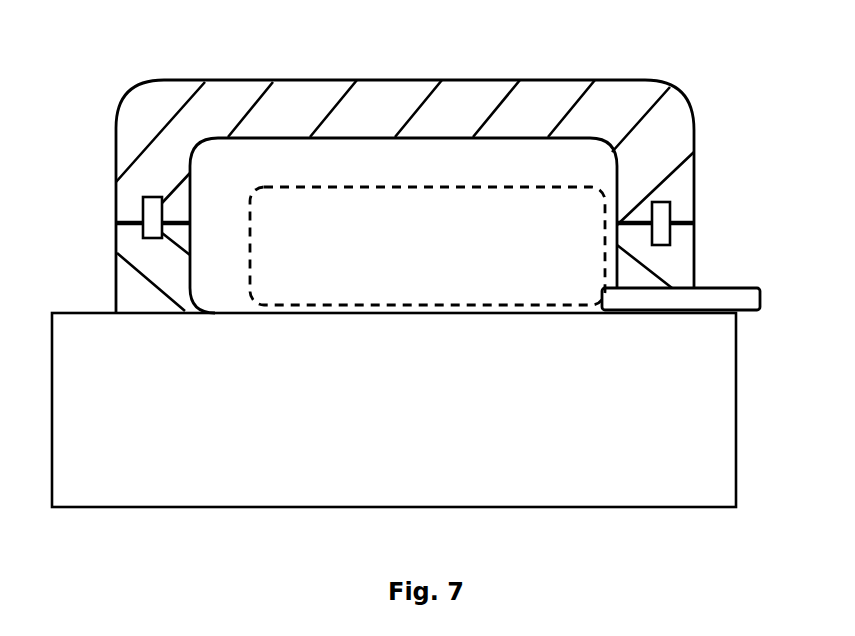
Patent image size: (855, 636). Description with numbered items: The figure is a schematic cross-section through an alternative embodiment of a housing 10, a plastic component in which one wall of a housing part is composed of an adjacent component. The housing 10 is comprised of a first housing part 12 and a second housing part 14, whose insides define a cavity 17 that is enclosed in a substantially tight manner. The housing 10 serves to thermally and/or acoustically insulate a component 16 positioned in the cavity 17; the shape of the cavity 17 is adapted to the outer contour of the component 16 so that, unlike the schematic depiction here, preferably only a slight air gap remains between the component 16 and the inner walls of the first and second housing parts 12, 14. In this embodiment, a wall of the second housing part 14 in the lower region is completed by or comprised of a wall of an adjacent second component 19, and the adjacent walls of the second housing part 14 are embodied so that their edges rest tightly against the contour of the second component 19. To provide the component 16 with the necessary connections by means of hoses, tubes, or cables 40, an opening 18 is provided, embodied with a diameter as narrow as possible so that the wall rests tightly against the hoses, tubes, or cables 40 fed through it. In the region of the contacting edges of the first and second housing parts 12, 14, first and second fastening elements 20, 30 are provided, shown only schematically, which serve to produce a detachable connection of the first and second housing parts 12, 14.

The housing 10 is at (406, 286).
The first housing part 12 is at (116, 135).
The second housing part 14 is at (127, 250).
The component 16 is at (447, 290).
The cavity 17 is at (493, 155).
The opening 18 is at (685, 289).
The second component 19 is at (563, 489).
The first fastening element 20 is at (143, 220).
The second fastening element 30 is at (672, 213).
The hoses, tubes, or cables 40 is at (740, 298).